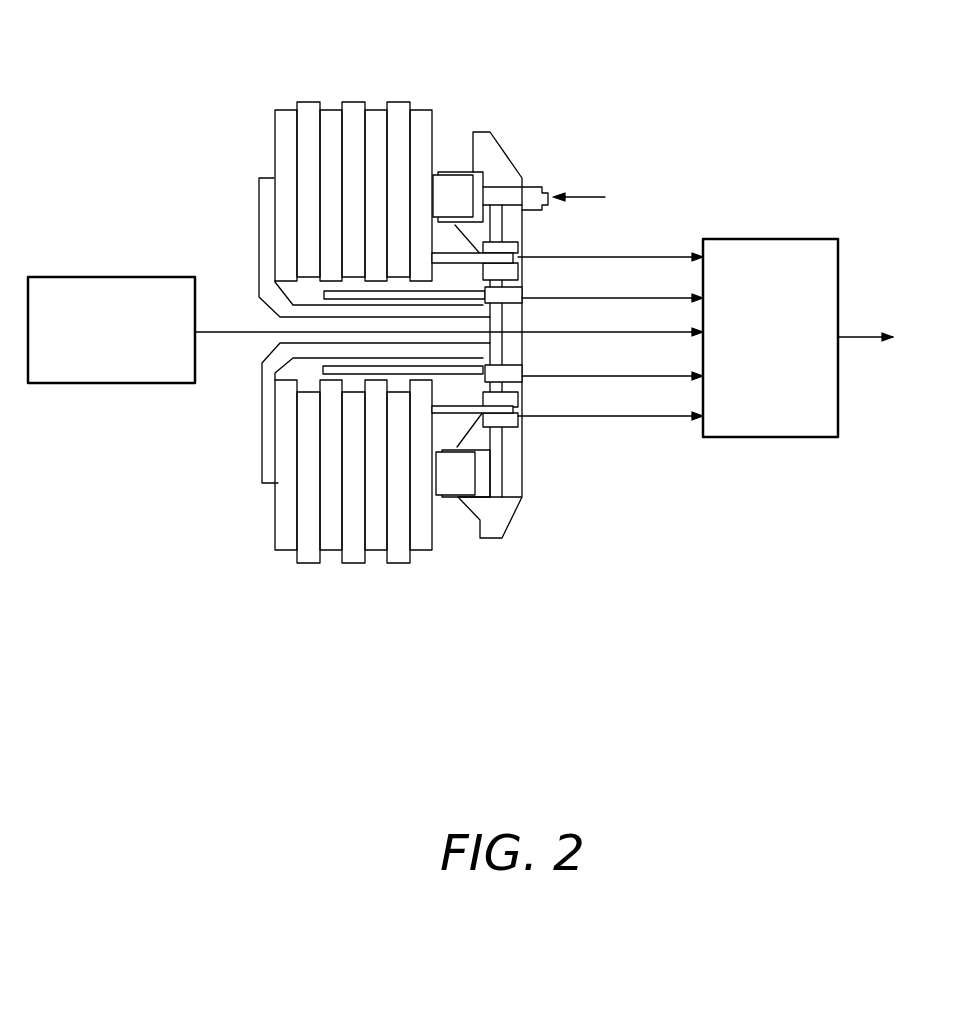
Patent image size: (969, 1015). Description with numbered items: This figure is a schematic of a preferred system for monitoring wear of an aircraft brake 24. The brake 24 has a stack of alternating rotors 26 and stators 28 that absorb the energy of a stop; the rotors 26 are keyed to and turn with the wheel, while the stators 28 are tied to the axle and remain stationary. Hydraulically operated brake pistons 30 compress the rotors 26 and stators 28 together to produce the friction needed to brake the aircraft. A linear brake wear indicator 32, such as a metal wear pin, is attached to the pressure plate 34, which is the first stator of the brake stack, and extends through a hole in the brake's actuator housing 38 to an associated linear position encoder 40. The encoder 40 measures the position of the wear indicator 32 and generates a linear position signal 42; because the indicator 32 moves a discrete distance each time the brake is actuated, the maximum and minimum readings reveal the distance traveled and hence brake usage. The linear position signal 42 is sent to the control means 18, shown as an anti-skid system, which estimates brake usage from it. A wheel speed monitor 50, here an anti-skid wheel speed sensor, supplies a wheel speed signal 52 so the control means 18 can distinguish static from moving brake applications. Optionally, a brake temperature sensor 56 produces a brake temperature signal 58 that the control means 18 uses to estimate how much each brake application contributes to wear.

The control means 18 is at (782, 248).
The aircraft brake 24 is at (600, 118).
The rotors 26 is at (353, 112).
The stators 28 is at (335, 123).
The brake pistons 30 is at (447, 180).
The linear brake wear indicator 32 is at (457, 252).
The pressure plate 34 is at (422, 110).
The actuator housing 38 is at (512, 167).
The linear position encoder 40 is at (517, 275).
The linear position signal 42 is at (653, 257).
The wheel speed monitor 50 is at (117, 282).
The wheel speed signal 52 is at (228, 332).
The brake temperature sensor 56 is at (513, 298).
The brake temperature signal 58 is at (617, 298).